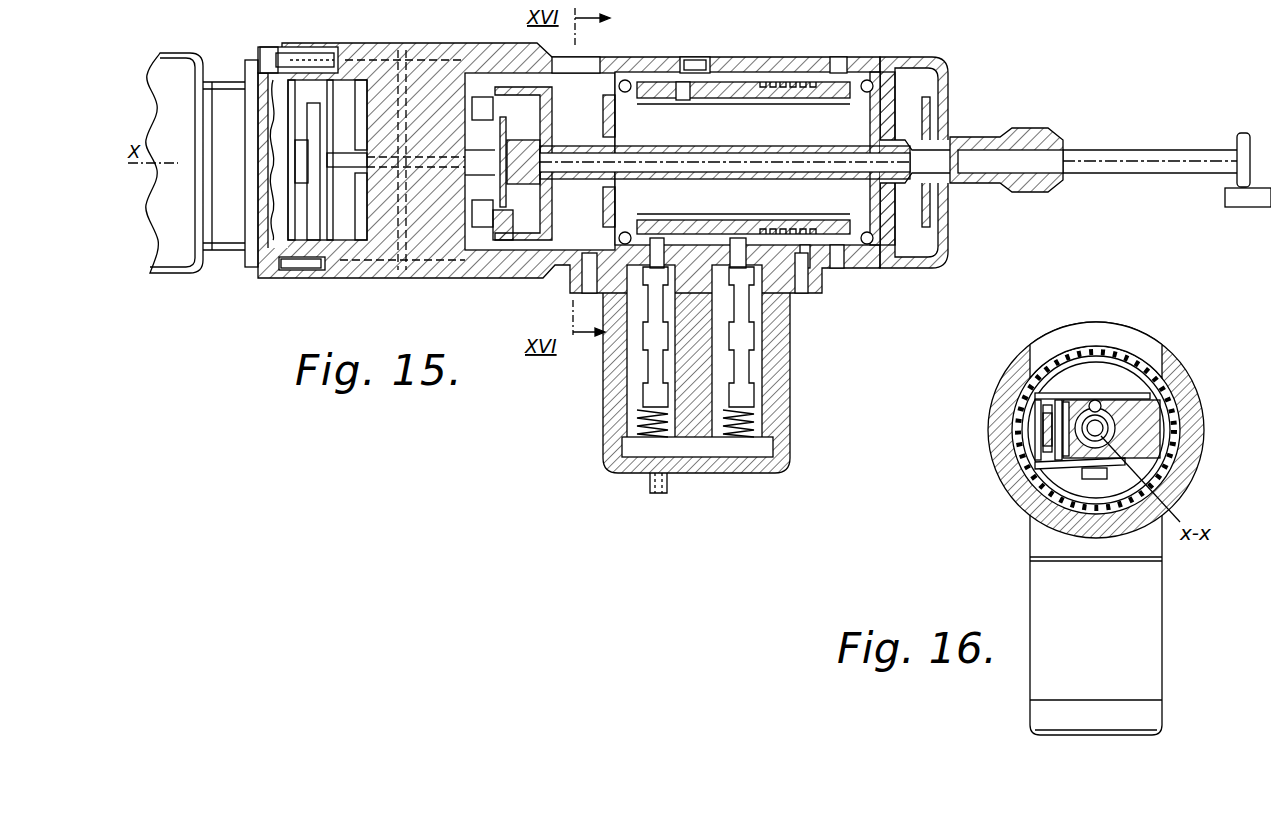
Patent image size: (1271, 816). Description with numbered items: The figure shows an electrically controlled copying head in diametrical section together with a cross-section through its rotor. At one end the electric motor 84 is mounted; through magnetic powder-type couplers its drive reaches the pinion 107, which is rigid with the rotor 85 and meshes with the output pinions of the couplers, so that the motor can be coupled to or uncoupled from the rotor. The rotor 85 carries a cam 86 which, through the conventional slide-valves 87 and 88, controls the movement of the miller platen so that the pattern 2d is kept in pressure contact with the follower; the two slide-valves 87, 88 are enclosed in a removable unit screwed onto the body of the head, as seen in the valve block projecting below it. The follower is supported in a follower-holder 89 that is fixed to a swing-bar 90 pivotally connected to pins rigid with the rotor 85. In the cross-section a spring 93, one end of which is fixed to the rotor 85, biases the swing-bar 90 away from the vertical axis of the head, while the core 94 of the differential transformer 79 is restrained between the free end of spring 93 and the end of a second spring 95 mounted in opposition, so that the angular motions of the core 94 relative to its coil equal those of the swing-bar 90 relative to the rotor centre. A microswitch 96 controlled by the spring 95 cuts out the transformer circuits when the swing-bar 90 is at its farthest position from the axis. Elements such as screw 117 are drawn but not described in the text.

In FIG. 15, the electric motor 84 is at (172, 267).
In FIG. 15, the screw 117 is at (289, 272).
In FIG. 15, the pinion 107 is at (498, 228).
In FIG. 15, the rotor 85 is at (612, 128).
In FIG. 16, the rotor 85 is at (1152, 406).
In FIG. 15, the cam 86 is at (684, 98).
In FIG. 15, the swing-bar 90 is at (763, 150).
In FIG. 16, the swing-bar 90 is at (1085, 432).
In FIG. 15, the follower-holder 89 is at (967, 143).
In FIG. 15, the pattern 2d is at (1245, 201).
In FIG. 15, the slide-valve 87 is at (653, 337).
In FIG. 15, the slide-valve 88 is at (744, 340).
In FIG. 16, the differential transformer 79 is at (1068, 420).
In FIG. 16, the spring 93 is at (1098, 402).
In FIG. 16, the core 94 is at (1040, 428).
In FIG. 16, the second spring 95 is at (1042, 482).
In FIG. 16, the microswitch 96 is at (1093, 480).